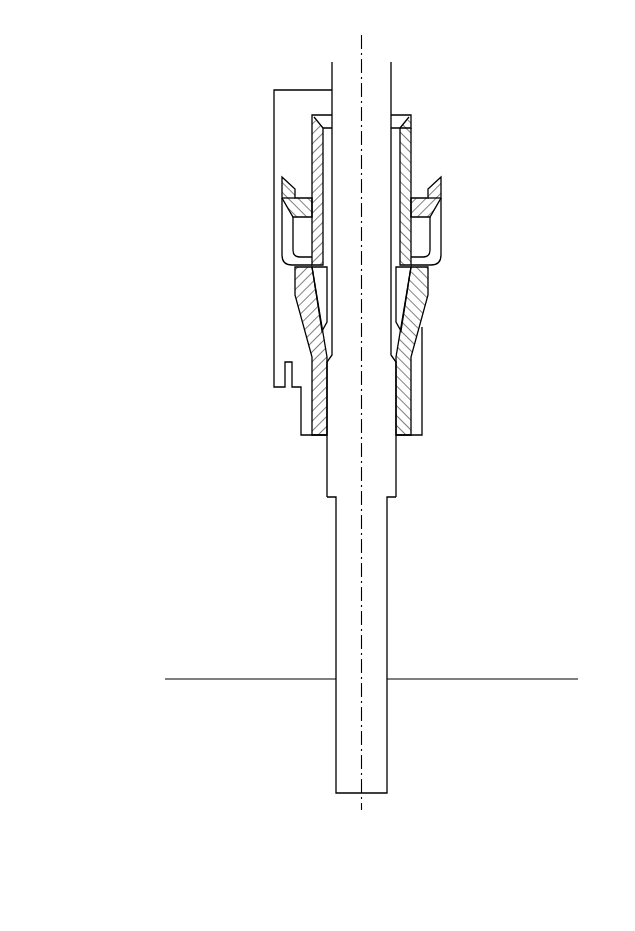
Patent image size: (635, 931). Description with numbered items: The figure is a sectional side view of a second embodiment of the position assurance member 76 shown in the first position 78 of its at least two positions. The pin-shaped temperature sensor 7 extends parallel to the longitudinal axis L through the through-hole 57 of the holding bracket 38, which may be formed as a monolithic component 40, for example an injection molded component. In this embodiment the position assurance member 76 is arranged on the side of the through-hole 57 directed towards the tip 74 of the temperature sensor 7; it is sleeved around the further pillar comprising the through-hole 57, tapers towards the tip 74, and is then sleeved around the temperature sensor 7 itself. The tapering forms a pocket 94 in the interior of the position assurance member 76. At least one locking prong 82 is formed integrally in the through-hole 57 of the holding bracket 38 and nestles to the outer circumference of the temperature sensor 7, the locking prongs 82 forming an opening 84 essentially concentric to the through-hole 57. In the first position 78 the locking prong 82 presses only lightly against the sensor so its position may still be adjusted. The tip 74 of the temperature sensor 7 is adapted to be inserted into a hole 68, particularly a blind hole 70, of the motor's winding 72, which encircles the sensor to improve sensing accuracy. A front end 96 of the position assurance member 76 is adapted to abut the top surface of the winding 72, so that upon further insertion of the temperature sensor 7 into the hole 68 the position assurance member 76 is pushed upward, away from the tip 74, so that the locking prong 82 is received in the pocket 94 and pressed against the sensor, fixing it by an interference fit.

The first position 78 is at (203, 60).
The longitudinal axis L is at (362, 45).
The monolithic component 40 is at (282, 137).
The front end 96 is at (313, 437).
The holding bracket 38 is at (412, 132).
The through-hole 57 is at (412, 165).
The position assurance member 76 is at (418, 278).
The locking prong 82 is at (323, 292).
The pocket 94 is at (397, 332).
The opening 84 is at (380, 408).
The temperature sensor 7 is at (378, 530).
The tip 74 is at (373, 642).
The hole 68 is at (464, 681).
The blind hole 70 is at (387, 762).
The winding 72 is at (213, 693).